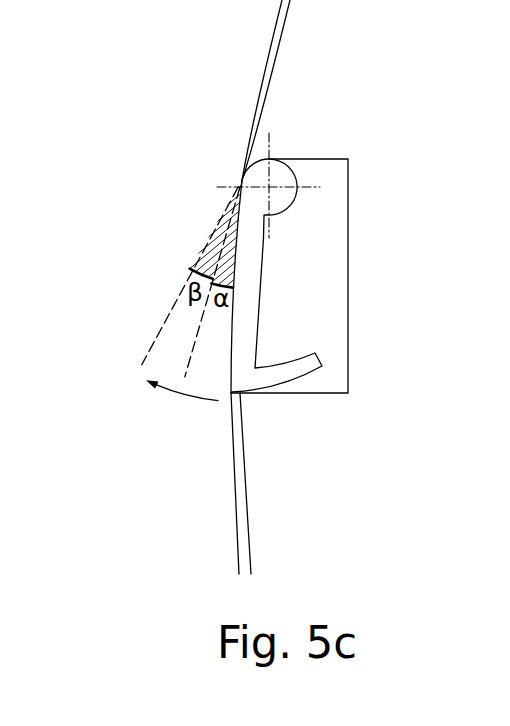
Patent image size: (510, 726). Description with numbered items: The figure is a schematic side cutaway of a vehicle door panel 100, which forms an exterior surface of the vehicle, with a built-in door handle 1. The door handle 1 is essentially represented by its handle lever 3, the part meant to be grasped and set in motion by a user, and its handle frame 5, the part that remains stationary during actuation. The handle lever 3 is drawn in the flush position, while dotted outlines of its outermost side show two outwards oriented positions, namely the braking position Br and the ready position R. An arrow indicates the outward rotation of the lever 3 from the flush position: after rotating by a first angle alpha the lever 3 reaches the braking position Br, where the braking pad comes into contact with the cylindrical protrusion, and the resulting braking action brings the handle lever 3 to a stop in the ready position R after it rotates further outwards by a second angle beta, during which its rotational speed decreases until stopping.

The vehicle door panel 100 is at (262, 78).
The door handle 1 is at (317, 272).
The handle lever 3 is at (262, 258).
The handle frame 5 is at (308, 394).
The braking position Br is at (200, 323).
The ready position R is at (148, 350).